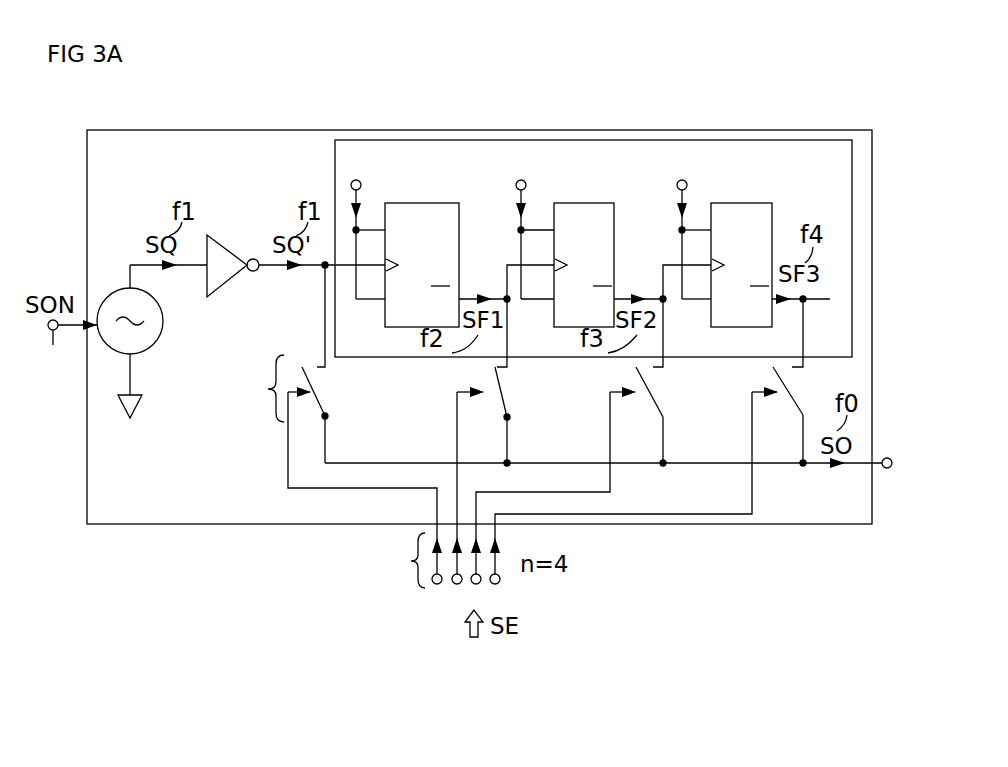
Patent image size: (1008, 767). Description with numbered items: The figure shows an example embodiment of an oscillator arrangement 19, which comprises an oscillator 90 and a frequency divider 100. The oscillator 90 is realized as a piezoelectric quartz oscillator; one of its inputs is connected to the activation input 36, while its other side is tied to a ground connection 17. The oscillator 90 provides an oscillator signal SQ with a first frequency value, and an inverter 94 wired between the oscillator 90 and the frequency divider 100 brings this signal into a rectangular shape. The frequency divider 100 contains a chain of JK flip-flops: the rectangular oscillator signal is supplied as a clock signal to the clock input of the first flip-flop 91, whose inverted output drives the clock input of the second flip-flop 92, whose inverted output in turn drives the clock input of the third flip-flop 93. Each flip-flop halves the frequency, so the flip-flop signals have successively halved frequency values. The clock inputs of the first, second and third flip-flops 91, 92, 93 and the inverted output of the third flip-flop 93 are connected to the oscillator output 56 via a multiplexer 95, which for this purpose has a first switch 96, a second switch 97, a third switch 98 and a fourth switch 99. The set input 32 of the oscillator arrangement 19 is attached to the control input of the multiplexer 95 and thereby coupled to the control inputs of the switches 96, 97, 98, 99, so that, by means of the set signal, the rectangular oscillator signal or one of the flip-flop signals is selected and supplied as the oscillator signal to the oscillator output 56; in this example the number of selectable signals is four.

The oscillator arrangement 19 is at (213, 527).
The activation input 36 is at (68, 351).
The oscillator 90 is at (163, 337).
The ground connection 17 is at (132, 393).
The inverter 94 is at (229, 254).
The frequency divider 100 is at (334, 150).
The first flip-flop 91 is at (397, 203).
The second flip-flop 92 is at (563, 203).
The third flip-flop 93 is at (722, 203).
The multiplexer 95 is at (260, 388).
The first switch 96 is at (329, 392).
The second switch 97 is at (510, 392).
The third switch 98 is at (660, 384).
The fourth switch 99 is at (790, 403).
The oscillator output 56 is at (889, 471).
The set input 32 is at (440, 560).